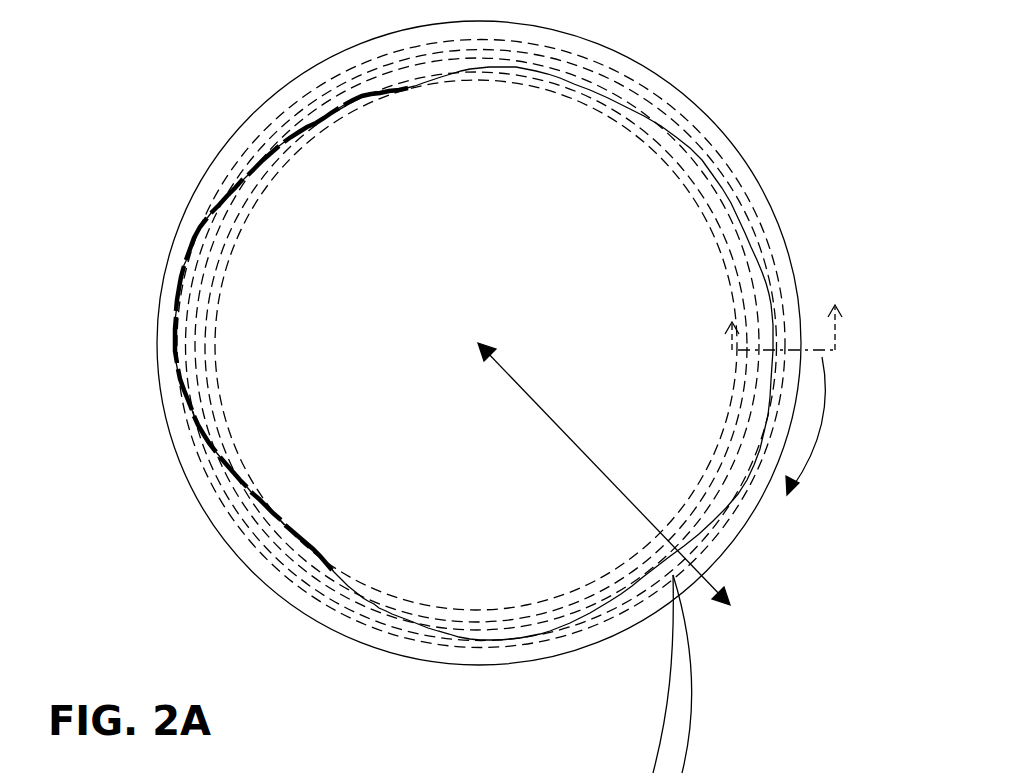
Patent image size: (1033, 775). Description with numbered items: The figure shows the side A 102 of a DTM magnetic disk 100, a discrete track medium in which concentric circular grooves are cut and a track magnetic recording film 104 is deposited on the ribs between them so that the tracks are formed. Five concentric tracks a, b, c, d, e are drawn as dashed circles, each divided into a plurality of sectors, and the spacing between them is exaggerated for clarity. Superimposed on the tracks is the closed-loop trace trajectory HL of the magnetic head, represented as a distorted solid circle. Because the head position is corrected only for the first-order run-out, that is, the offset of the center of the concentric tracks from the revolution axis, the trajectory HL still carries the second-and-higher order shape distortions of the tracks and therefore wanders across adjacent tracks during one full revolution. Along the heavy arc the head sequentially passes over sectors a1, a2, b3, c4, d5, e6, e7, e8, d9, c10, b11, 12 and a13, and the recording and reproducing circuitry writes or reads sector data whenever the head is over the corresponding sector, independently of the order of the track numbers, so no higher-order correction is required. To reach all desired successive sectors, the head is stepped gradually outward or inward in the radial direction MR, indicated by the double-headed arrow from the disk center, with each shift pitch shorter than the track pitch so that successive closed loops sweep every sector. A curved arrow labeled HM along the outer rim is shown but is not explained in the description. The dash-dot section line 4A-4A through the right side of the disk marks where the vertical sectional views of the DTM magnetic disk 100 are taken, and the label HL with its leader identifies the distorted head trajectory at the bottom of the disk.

The DTM magnetic disk 100 is at (696, 84).
The side A 102 is at (557, 35).
The track magnetic recording film 104 is at (612, 83).
The sector 12 is at (330, 123).
The sector a1 is at (297, 540).
The sector a2 is at (262, 515).
The sector b3 is at (233, 470).
The sector c4 is at (200, 442).
The sector d5 is at (185, 390).
The sector e6 is at (175, 345).
The sector e7 is at (178, 288).
The sector e8 is at (190, 240).
The sector d9 is at (228, 193).
The sector c10 is at (257, 157).
The sector b11 is at (303, 130).
The sector a13 is at (383, 93).
The track a is at (610, 112).
The track b is at (657, 130).
The track c is at (693, 153).
The track d is at (730, 187).
The track e is at (757, 218).
The section line 4A- 4A is at (775, 330).
The movement direction HM is at (821, 426).
The radial direction MR is at (615, 489).
The trajectory HL is at (503, 636).